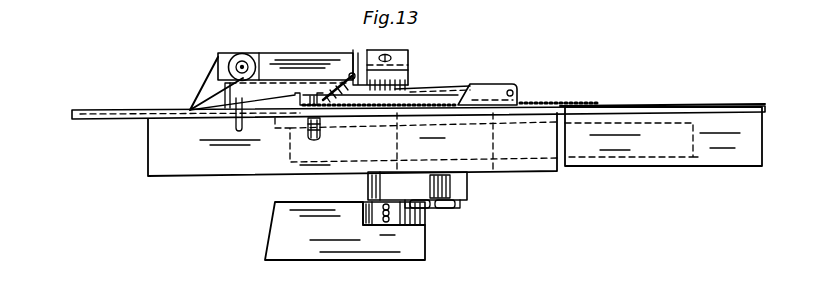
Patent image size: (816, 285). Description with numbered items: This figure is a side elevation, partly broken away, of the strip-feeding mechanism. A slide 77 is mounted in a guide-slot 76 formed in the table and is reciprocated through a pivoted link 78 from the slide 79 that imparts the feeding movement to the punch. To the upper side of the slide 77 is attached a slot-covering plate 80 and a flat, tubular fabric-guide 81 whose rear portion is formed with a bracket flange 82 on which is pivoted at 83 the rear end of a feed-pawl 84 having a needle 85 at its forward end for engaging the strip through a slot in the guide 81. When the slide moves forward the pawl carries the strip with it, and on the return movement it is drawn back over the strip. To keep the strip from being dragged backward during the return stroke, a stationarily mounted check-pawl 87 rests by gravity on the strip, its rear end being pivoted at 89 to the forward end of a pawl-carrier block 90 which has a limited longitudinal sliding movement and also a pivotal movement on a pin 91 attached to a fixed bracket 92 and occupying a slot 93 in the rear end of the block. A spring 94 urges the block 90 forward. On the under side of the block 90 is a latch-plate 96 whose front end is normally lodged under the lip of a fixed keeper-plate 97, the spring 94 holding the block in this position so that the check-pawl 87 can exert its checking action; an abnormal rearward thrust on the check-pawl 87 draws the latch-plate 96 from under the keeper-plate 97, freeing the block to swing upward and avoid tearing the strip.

The guide-slot 76 is at (640, 147).
The slide 77 is at (492, 142).
The pivoted link 78 is at (467, 190).
The slide 79 is at (407, 248).
The slot-covering plate 80 is at (685, 107).
The fabric-guide 81 is at (125, 110).
The bracket flange 82 is at (491, 88).
The pivot 83 is at (514, 92).
The feed-pawl 84 is at (453, 92).
The needle 85 is at (350, 74).
The check-pawl 87 is at (207, 73).
The pivot 89 is at (250, 55).
The pawl-carrier block 90 is at (295, 53).
The pin 91 is at (406, 63).
The fixed bracket 92 is at (409, 70).
The slot 93 is at (391, 56).
The spring 94 is at (364, 66).
The latch-plate 96 is at (273, 80).
The keeper-plate 97 is at (219, 53).